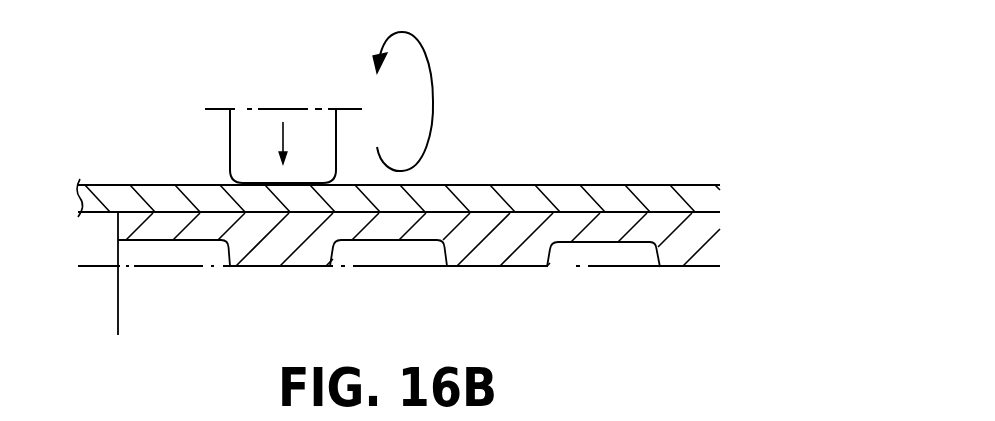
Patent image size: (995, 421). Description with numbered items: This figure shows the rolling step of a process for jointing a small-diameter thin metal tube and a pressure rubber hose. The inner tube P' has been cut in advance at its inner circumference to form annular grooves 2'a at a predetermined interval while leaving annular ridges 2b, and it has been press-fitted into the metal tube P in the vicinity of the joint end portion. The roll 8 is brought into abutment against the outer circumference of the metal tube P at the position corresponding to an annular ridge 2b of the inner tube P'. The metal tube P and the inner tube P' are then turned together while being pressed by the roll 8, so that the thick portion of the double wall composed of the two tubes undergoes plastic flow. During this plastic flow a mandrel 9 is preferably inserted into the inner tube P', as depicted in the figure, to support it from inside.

The roll 8 is at (307, 120).
The mandrel 9 is at (165, 267).
The annular groove 2'a is at (388, 290).
The annular ridge 2b is at (518, 258).
The metal tube P is at (415, 165).
The inner tube P' is at (415, 287).